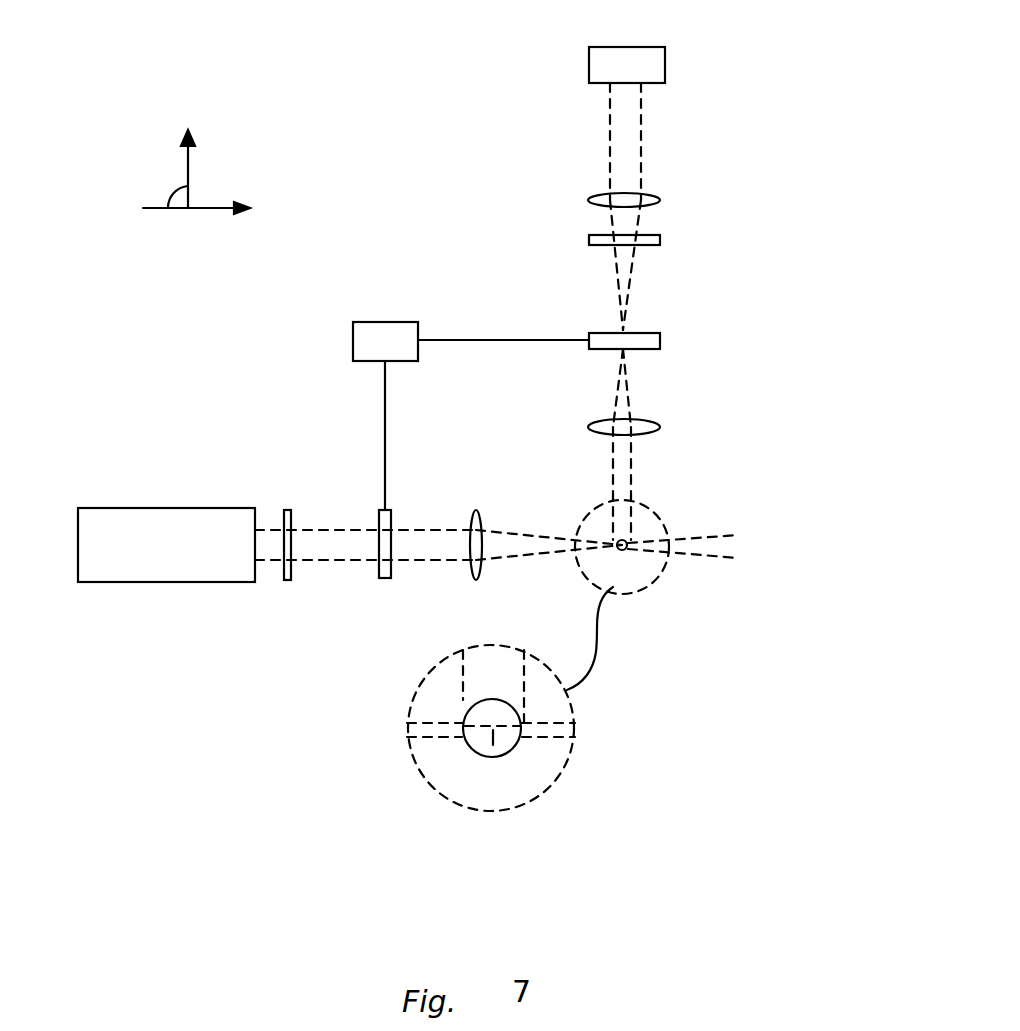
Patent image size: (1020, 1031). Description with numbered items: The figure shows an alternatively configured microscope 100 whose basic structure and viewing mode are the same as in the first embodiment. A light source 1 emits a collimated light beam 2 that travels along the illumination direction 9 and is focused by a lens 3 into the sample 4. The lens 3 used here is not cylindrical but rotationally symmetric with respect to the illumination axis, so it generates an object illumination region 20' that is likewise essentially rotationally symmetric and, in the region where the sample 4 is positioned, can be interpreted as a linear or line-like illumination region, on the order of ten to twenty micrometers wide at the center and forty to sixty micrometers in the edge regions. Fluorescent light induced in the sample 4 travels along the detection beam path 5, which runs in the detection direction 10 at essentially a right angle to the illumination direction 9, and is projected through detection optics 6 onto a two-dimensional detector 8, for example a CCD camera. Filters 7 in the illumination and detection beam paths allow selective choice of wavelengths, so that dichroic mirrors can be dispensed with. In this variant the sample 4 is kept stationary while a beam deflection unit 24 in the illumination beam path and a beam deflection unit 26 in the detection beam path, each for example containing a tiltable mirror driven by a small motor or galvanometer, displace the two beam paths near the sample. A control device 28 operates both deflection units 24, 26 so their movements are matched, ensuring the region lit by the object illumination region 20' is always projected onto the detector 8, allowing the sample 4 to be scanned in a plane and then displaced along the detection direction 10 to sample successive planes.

The microscope 100 is at (428, 36).
The light source 1 is at (208, 520).
The light beam 2 is at (355, 542).
The lens 3 is at (473, 580).
The sample 4 is at (623, 550).
The detection beam path 5 is at (622, 492).
The detection optics 6 is at (660, 199).
The filter 7 is at (290, 513).
The detector 8 is at (655, 63).
The illumination direction 9 is at (228, 211).
The detection direction 10 is at (187, 158).
The object illumination region 20' is at (445, 807).
The beam deflection unit 24 is at (385, 578).
The beam deflection unit 26 is at (660, 340).
The control device 28 is at (385, 332).